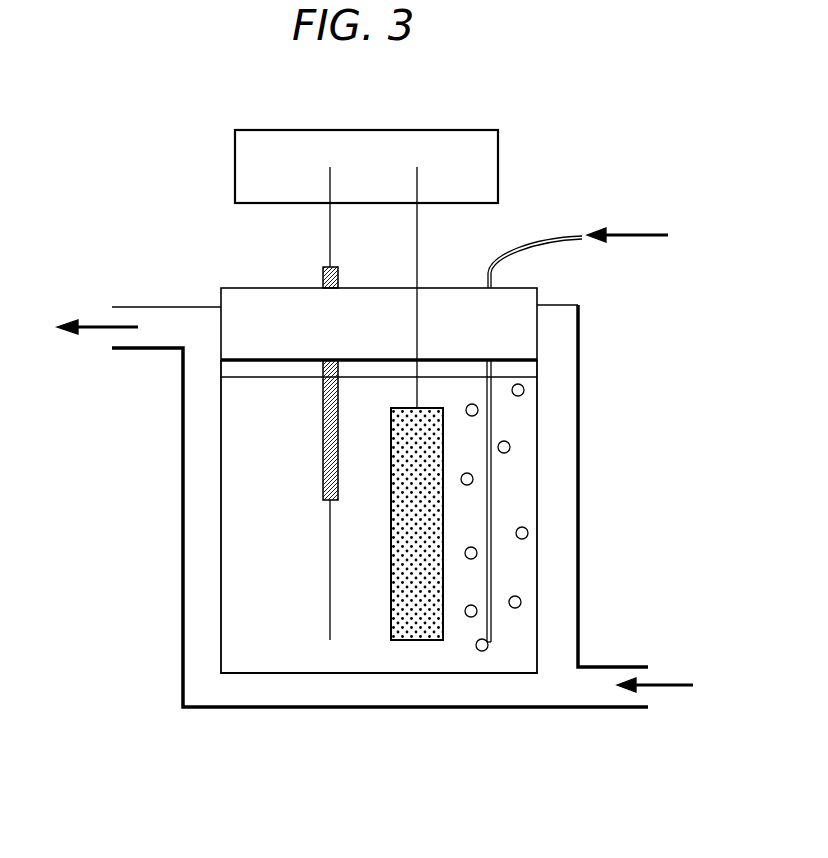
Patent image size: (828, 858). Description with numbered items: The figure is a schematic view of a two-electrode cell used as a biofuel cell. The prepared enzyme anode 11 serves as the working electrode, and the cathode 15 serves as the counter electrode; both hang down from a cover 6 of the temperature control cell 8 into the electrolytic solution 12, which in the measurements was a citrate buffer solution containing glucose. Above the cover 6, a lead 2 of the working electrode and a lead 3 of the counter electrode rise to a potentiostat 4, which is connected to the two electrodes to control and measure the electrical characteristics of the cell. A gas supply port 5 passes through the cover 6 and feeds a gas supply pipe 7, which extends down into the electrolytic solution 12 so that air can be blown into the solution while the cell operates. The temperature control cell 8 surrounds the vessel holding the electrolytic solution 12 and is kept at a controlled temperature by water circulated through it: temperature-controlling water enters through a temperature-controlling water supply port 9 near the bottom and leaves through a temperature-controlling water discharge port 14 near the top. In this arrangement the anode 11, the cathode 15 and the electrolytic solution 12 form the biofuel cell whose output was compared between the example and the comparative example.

The lead of a working electrode 2 is at (332, 183).
The lead of a counter electrode 3 is at (418, 183).
The potentiostat 4 is at (485, 152).
The gas supply port 5 is at (563, 233).
The cover of a temperature control cell 6 is at (518, 338).
The gas supply pipe 7 is at (492, 493).
The temperature control cell 8 is at (558, 603).
The temperature-controlling water supply port 9 is at (610, 670).
The anode 11 is at (332, 625).
The electrolytic solution 12 is at (253, 650).
The temperature-controlling water discharge port 14 is at (157, 318).
The cathode 15 is at (415, 630).